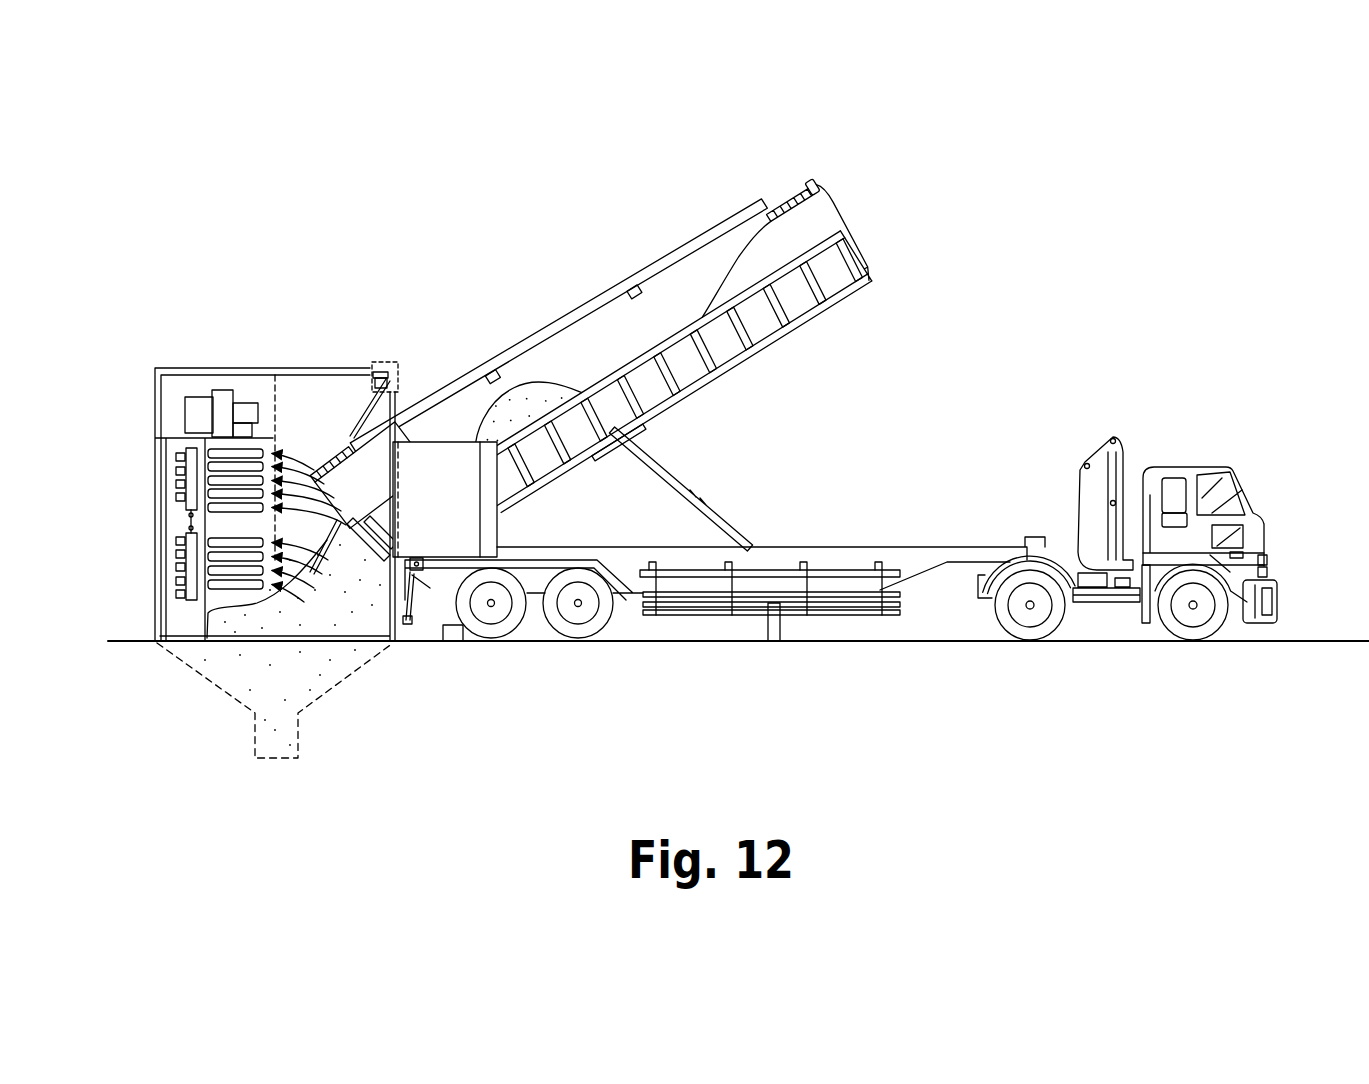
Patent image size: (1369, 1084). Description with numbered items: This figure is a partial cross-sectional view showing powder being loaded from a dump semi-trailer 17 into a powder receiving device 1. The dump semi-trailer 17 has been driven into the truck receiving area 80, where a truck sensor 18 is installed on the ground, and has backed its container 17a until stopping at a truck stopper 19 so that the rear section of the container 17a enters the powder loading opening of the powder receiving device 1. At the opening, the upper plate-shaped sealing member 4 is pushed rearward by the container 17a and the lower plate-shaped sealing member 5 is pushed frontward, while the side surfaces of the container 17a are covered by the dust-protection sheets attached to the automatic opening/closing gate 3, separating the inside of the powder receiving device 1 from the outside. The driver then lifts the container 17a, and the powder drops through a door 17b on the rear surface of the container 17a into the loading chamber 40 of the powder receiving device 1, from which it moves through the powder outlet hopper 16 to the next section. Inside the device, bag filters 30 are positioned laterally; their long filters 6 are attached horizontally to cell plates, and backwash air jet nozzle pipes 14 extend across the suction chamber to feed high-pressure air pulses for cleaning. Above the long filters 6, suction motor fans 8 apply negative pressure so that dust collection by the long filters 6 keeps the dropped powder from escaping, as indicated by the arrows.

The powder receiving device 1 is at (395, 268).
The automatic opening/closing gate 3 is at (440, 470).
The sealing member 4 is at (357, 437).
The sealing member 5 is at (399, 613).
The long filter 6 is at (230, 593).
The suction motor fan 8 is at (226, 392).
The backwash air jet nozzle pipe 14 is at (183, 597).
The powder outlet hopper 16 is at (246, 705).
The dump semi-trailer 17 is at (1188, 466).
The container 17a is at (822, 215).
The door 17b is at (335, 506).
The truck sensor 18 is at (775, 620).
The truck stopper 19 is at (455, 640).
The bag filter 30 is at (178, 527).
The loading chamber 40 is at (300, 404).
The truck receiving area 80 is at (1313, 641).